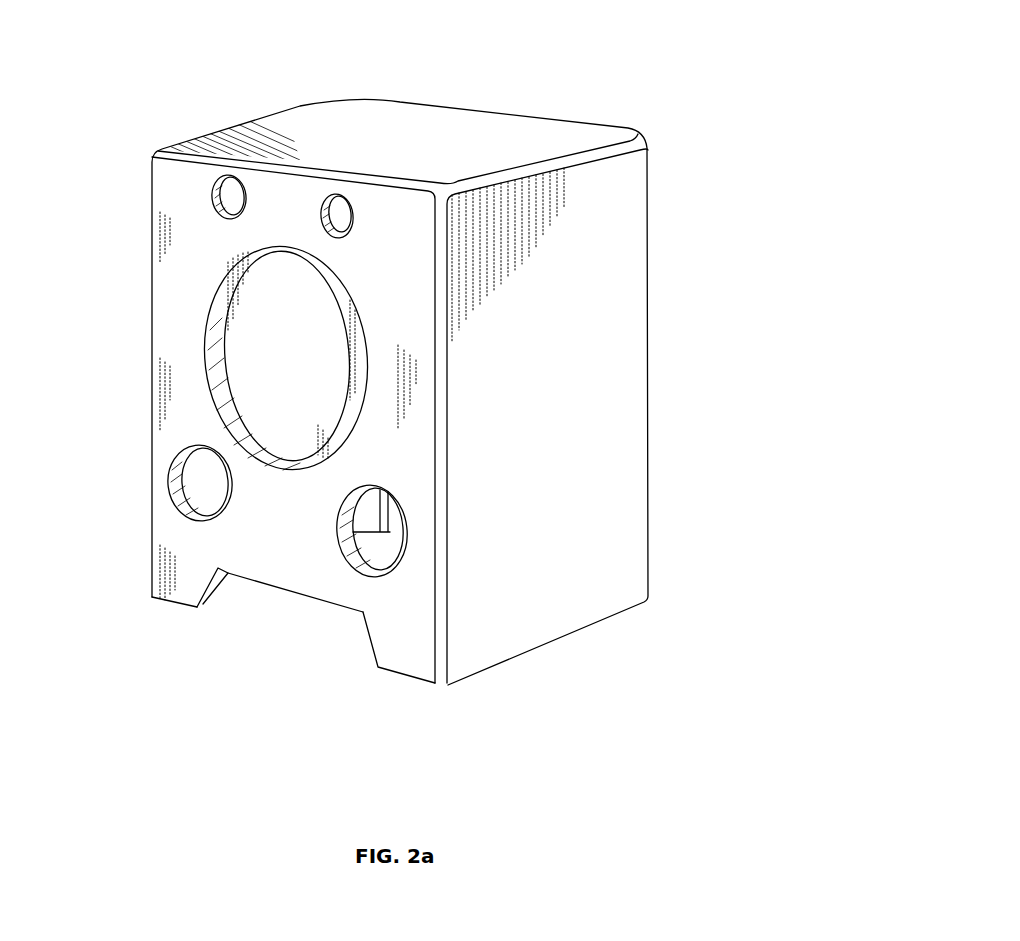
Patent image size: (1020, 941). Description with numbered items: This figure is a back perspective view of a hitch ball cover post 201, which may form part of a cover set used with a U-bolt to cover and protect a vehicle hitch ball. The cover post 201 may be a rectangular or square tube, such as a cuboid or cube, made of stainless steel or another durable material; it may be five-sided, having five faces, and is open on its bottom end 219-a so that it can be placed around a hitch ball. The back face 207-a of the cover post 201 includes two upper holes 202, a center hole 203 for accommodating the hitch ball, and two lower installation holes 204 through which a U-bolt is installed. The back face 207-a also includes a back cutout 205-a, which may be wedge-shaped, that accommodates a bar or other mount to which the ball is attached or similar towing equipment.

The hitch ball cover post 201 is at (698, 197).
The upper holes 202 is at (247, 200).
The center hole 203 is at (205, 312).
The lower installation holes 204 is at (337, 540).
The back cutout 205-a is at (236, 593).
The back face 207-a is at (421, 275).
The bottom end 219-a is at (393, 681).